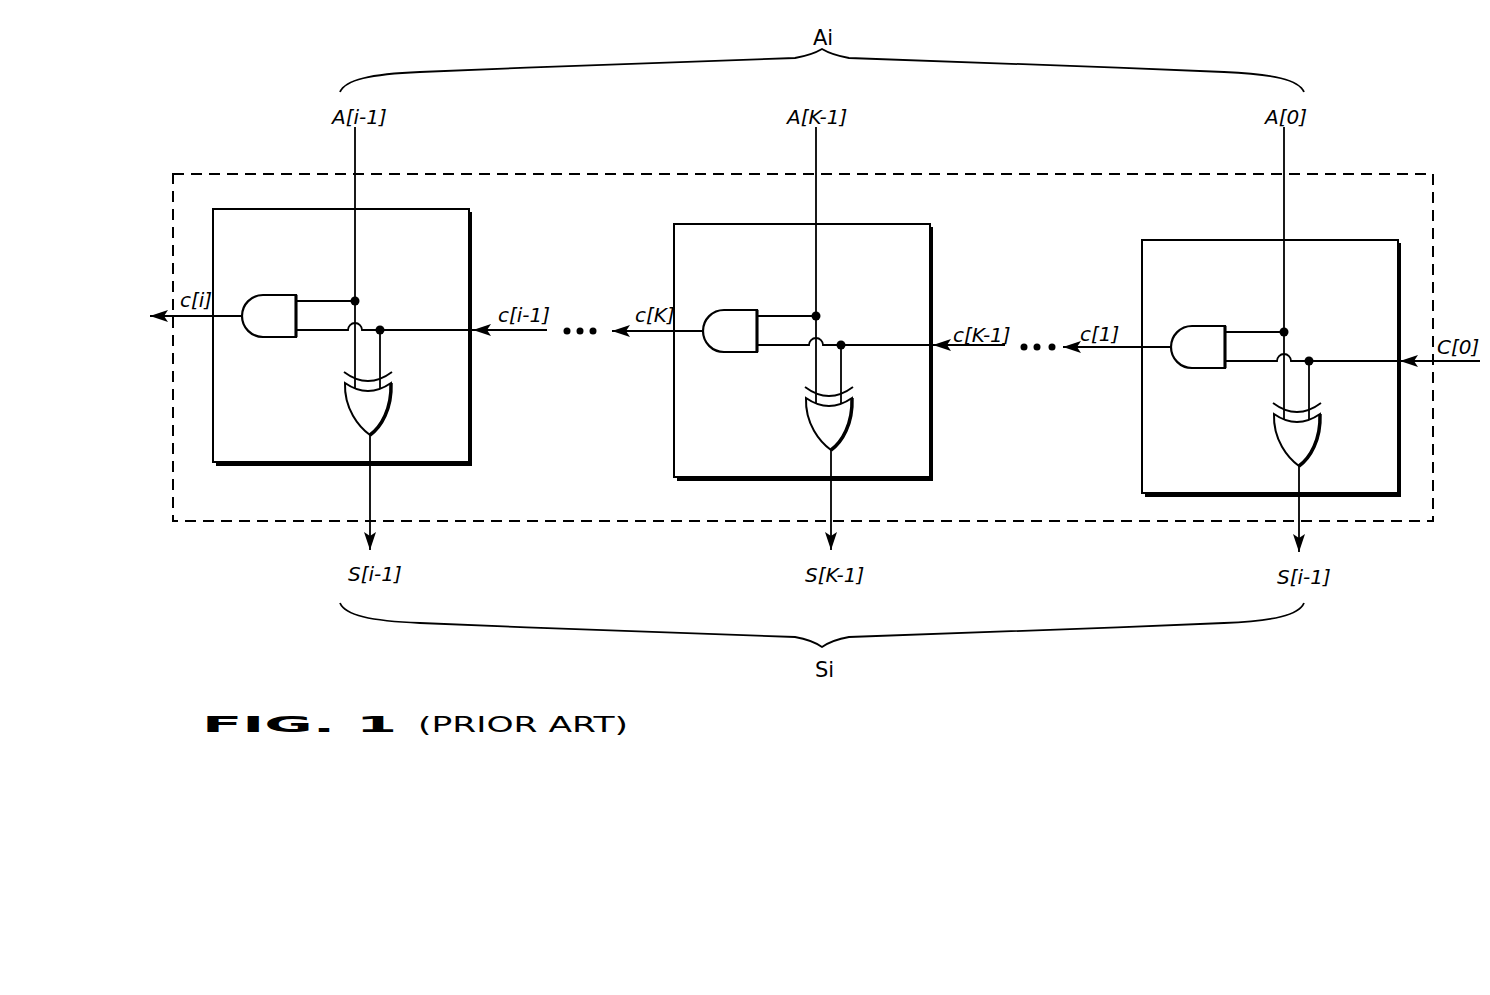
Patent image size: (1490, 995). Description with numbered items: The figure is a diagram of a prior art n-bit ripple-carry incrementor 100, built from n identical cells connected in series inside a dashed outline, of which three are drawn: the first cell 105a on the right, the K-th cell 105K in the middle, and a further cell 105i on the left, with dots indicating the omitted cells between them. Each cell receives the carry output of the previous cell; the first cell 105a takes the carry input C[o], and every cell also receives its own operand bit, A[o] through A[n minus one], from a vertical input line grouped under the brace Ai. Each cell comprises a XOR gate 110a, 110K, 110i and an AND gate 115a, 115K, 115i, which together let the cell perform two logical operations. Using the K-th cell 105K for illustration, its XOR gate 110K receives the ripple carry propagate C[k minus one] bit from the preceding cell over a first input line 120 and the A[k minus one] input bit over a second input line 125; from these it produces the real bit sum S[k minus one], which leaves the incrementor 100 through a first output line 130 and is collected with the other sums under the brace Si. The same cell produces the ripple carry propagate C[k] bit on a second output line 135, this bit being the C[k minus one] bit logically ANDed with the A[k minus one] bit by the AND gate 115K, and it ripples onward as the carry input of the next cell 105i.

The n-bit ripple-carry incrementor 100 is at (1042, 552).
The cell 105i is at (256, 224).
The K-th cell 105K is at (814, 338).
The first cell 105a is at (1271, 339).
The XOR gate 110i is at (350, 461).
The XOR gate of K-th cell 110K is at (810, 425).
The XOR gate of first cell 110a is at (1277, 477).
The AND gate 115i is at (281, 297).
The AND gate of K-th cell 115K is at (745, 313).
The AND gate of first cell 115a is at (1211, 328).
The first input line 120 is at (973, 368).
The second input line 125 is at (782, 265).
The first output line 130 is at (803, 500).
The second output line 135 is at (657, 355).